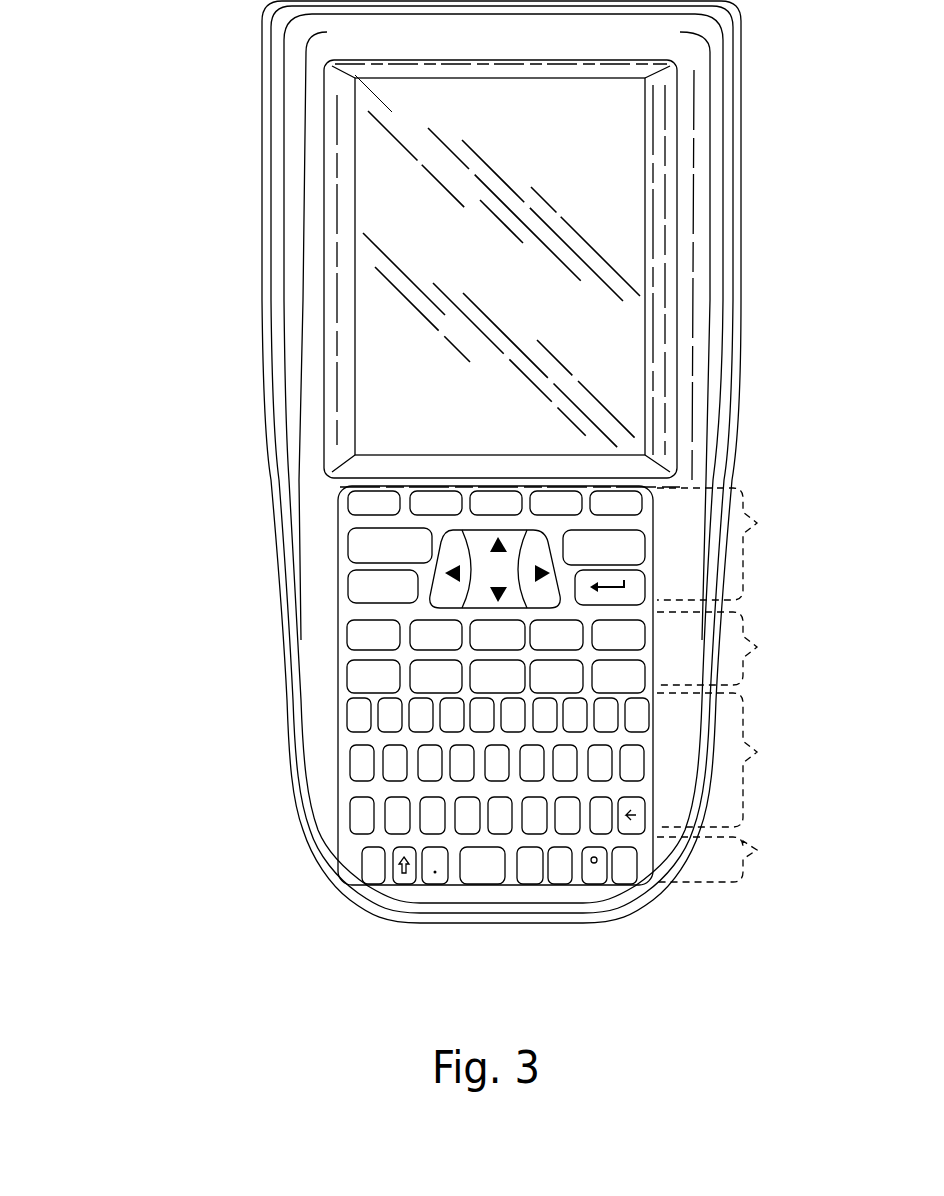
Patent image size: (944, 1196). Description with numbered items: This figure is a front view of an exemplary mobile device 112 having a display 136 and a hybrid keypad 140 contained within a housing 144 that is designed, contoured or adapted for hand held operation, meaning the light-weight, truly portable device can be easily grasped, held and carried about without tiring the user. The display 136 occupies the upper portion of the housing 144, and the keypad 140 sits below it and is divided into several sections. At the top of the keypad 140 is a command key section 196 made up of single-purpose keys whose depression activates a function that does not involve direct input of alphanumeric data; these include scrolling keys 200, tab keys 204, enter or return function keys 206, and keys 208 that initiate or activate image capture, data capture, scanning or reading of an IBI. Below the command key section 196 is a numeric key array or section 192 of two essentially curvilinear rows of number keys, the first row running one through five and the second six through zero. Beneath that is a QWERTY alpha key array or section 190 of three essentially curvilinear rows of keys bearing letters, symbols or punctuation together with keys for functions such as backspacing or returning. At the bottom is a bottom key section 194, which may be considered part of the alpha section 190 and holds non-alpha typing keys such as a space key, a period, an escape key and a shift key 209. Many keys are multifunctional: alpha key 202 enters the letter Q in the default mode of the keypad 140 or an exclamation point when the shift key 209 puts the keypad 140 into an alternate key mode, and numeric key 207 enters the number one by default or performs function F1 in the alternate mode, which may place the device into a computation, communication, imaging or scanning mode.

The mobile device 112 is at (183, 160).
The display 136 is at (622, 170).
The housing 144 is at (297, 415).
The hybrid keypad 140 is at (345, 505).
The scrolling keys 200 is at (476, 532).
The keys to initiate image capture, data capture, scanning or reading 208 is at (350, 543).
The tab keys 204 is at (348, 588).
The enter or return function keys 206 is at (632, 578).
The numeric input key 207 is at (348, 630).
The alpha input key 202 is at (350, 713).
The shift key 209 is at (396, 880).
The command key section 196 is at (729, 544).
The numeric key array or section 192 is at (731, 648).
The QWERTY alpha key array or section 190 is at (729, 760).
The bottom key section 194 is at (727, 859).